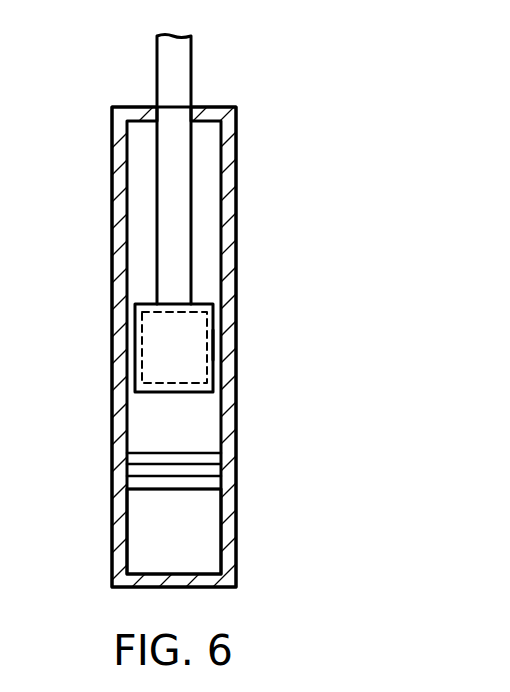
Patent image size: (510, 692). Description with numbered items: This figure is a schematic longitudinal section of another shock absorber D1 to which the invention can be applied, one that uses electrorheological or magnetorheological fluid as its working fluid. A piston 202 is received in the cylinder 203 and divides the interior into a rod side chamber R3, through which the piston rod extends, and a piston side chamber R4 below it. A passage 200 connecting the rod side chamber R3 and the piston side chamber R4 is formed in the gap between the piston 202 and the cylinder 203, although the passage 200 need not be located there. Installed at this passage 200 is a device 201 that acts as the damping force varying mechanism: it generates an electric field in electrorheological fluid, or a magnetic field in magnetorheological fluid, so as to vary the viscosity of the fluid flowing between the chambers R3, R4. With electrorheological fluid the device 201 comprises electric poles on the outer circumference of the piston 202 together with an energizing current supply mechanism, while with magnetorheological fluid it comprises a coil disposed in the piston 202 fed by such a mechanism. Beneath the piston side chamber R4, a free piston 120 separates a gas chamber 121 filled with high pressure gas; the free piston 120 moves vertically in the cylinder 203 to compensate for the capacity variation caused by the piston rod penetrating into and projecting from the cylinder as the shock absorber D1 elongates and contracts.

The shock absorber D1 is at (243, 129).
The rod side chamber R3 is at (202, 229).
The piston side chamber R4 is at (192, 437).
The passage 200 is at (135, 324).
The device 201 is at (142, 377).
The piston 202 is at (214, 343).
The cylinder 203 is at (236, 291).
The free piston 120 is at (213, 459).
The gas chamber 121 is at (191, 532).